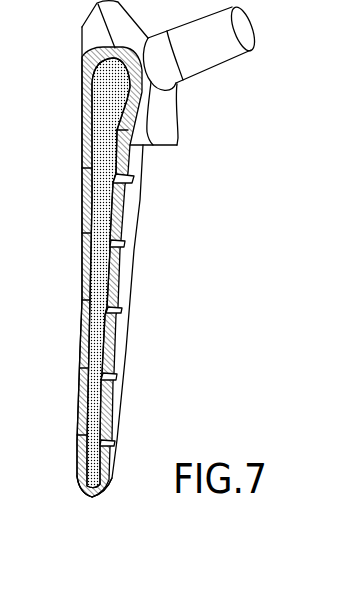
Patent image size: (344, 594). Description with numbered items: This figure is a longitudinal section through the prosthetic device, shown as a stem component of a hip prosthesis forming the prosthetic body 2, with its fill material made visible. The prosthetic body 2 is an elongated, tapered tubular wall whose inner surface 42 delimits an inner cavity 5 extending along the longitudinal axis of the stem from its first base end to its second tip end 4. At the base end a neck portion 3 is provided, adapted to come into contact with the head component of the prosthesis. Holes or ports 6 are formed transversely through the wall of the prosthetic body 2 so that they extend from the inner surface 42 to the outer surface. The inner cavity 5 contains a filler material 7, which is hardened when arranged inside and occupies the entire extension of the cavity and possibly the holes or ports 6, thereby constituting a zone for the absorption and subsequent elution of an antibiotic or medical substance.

The prosthetic body 2 is at (177, 148).
The neck portion 3 is at (207, 69).
The second tip end 4 is at (96, 498).
The inner cavity 5 is at (103, 360).
The holes or ports 6 is at (134, 181).
The filler material 7 is at (84, 153).
The inner surface 42 is at (105, 279).